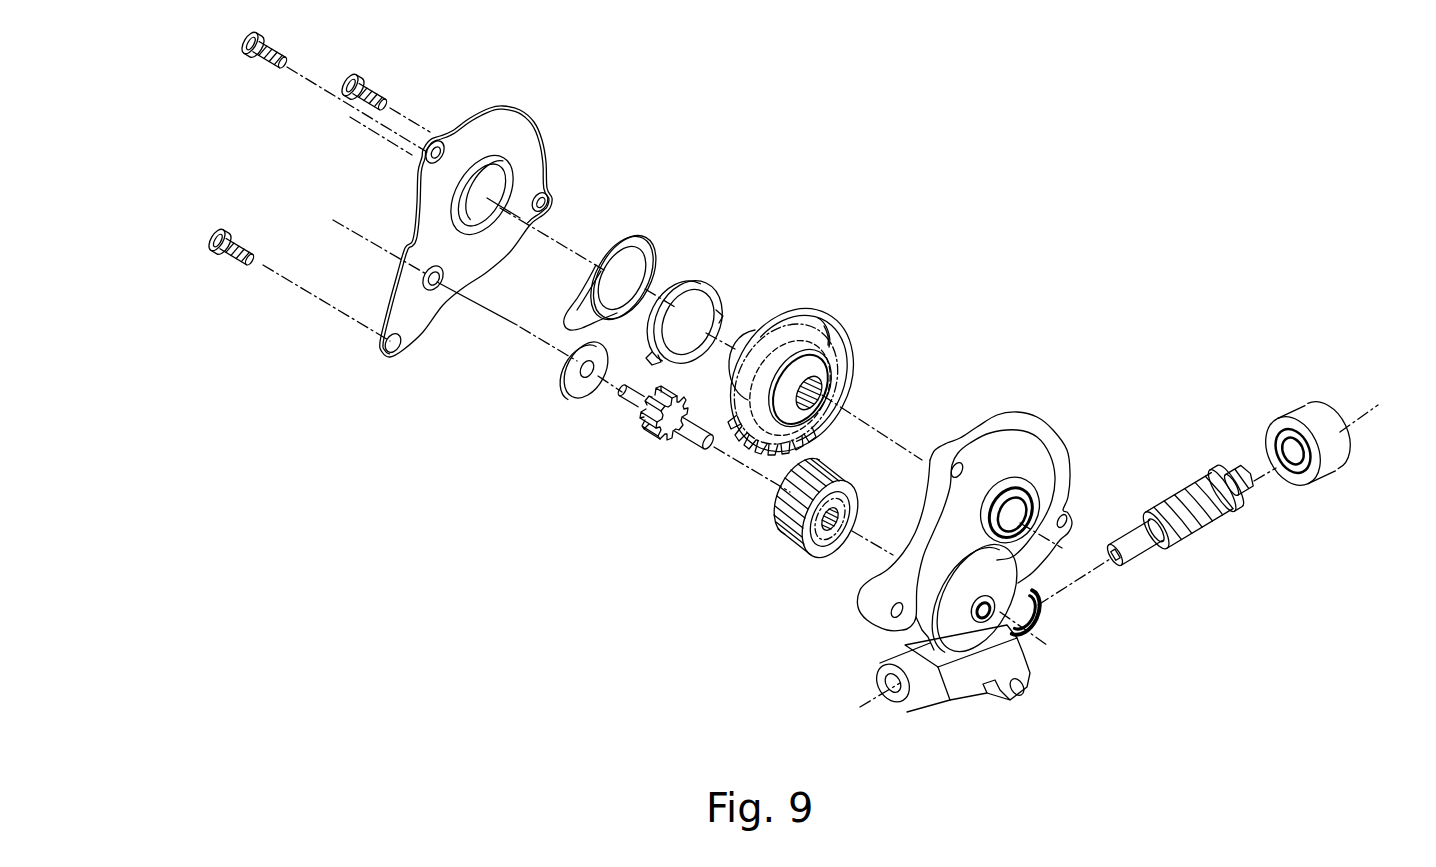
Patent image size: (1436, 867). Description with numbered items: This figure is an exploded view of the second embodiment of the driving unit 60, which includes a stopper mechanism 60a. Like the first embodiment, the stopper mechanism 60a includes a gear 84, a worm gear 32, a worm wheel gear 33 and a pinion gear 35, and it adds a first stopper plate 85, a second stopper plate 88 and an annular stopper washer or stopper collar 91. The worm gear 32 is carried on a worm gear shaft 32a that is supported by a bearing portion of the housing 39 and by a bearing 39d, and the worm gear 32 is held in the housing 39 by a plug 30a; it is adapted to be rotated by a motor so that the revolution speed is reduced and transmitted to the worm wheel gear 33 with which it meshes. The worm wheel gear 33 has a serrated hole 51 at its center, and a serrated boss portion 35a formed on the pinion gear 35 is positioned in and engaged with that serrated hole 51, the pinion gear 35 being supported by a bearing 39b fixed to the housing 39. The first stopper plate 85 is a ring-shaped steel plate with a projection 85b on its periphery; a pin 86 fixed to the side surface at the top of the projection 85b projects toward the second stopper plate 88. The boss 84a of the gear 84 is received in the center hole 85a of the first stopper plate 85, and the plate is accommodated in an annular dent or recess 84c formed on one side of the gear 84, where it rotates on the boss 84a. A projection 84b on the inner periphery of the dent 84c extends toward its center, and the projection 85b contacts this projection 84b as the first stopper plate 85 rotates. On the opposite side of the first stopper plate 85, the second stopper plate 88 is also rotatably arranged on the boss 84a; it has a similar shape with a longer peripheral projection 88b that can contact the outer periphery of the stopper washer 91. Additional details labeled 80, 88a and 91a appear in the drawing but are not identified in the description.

The plug 30a is at (1343, 450).
The worm gear 32 is at (1177, 507).
The worm gear shaft 32a is at (1130, 530).
The worm wheel gear 33 is at (790, 543).
The pinion gear 35 is at (653, 440).
The serrated boss portion 35a is at (673, 437).
The housing 39 is at (1020, 410).
The bearing 39b is at (983, 622).
The bearing 39d is at (1213, 480).
The serrated hole 51 is at (833, 523).
The driving unit 60 is at (857, 159).
The stopper mechanism 60a is at (731, 159).
The splined hub 80 is at (817, 393).
The gear 84 is at (833, 325).
The boss 84a is at (767, 337).
The projection 84b is at (820, 330).
The dent or recess 84c is at (820, 317).
The first stopper plate 85 is at (713, 287).
The center hole 85a is at (720, 317).
The projection 85b is at (670, 370).
The pin 86 is at (663, 303).
The second stopper plate 88 is at (647, 237).
The spring plate opening 88a is at (643, 268).
The projection 88b is at (572, 308).
The stopper washer 91 is at (563, 387).
The washer hole 91a is at (597, 377).